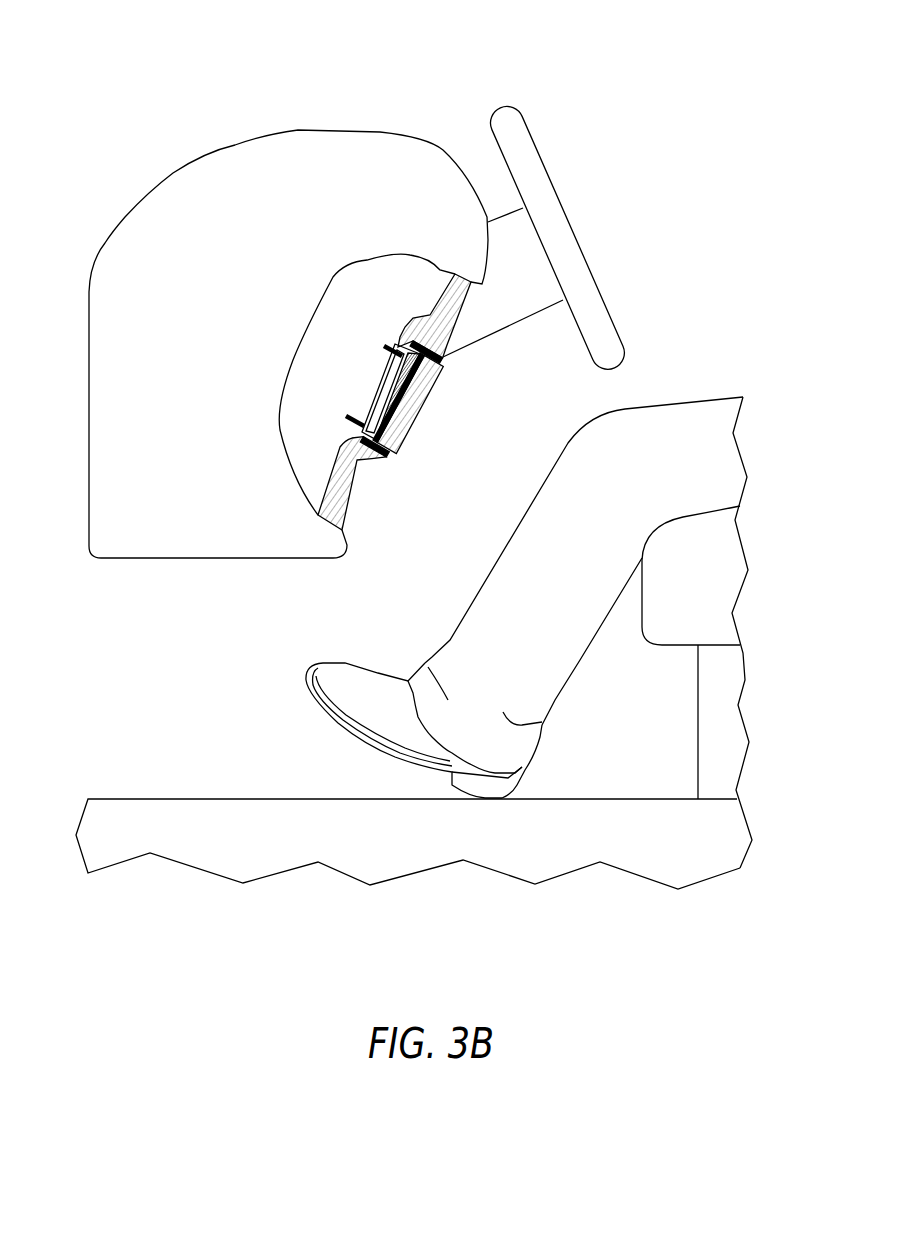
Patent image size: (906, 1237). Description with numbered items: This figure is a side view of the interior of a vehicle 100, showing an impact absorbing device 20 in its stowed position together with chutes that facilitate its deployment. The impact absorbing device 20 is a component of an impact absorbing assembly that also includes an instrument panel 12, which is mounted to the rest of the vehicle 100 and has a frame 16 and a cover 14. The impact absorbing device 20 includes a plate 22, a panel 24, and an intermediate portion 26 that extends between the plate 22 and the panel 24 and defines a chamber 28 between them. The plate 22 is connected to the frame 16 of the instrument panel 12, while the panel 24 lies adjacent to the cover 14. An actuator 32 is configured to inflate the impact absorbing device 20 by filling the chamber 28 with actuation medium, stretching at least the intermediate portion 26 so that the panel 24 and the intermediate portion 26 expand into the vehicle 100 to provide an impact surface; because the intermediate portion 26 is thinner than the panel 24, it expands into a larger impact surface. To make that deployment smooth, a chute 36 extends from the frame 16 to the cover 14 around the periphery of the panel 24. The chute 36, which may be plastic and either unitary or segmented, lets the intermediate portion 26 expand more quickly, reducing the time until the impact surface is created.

The vehicle 100 is at (110, 60).
The instrument panel 12 is at (468, 377).
The cover 14 is at (460, 312).
The frame 16 is at (338, 448).
The impact absorbing device 20 is at (355, 310).
The plate 22 is at (380, 366).
The panel 24 is at (428, 402).
The intermediate portion 26 is at (386, 442).
The chamber 28 is at (412, 428).
The actuator 32 is at (373, 390).
The chute 36 is at (427, 317).